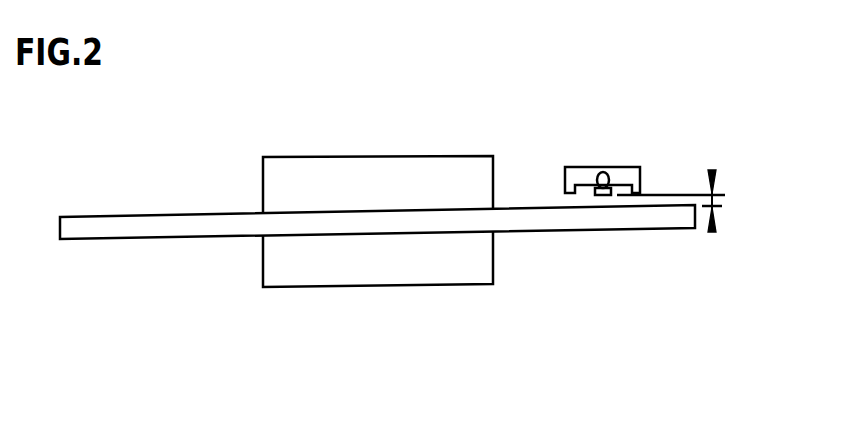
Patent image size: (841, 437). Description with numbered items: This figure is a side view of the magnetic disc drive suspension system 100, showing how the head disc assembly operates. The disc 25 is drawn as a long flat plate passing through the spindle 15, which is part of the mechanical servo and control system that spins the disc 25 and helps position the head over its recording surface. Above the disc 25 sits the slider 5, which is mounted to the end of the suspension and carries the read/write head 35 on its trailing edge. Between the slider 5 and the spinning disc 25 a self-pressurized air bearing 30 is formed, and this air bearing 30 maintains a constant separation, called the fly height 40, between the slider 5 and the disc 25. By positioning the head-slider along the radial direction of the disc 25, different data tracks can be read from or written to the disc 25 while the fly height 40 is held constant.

The magnetic disc drive suspension system 100 is at (162, 314).
The disc 25 is at (93, 225).
The spindle 15 is at (435, 168).
The slider 5 is at (632, 170).
The self-pressurized air bearing 30 is at (602, 197).
The read/write head 35 is at (605, 197).
The fly height 40 is at (725, 199).